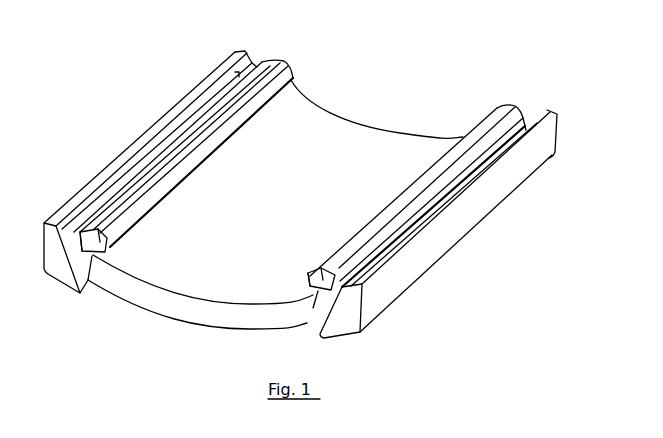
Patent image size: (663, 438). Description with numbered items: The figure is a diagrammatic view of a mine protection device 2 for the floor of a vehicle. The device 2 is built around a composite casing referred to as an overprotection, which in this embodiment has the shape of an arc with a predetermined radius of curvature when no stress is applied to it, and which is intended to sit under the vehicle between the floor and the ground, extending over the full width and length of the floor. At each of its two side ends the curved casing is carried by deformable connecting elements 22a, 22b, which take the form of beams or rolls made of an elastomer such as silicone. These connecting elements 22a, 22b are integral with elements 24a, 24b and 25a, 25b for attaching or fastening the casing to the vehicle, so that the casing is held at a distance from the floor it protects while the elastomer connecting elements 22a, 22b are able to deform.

The mine protection device 2 is at (194, 311).
The deformable connecting element 22a is at (322, 296).
The deformable connecting element 22b is at (87, 257).
The attaching element 24a is at (345, 322).
The attaching element 24b is at (58, 277).
The attaching element 25a is at (497, 107).
The attaching element 25b is at (290, 66).